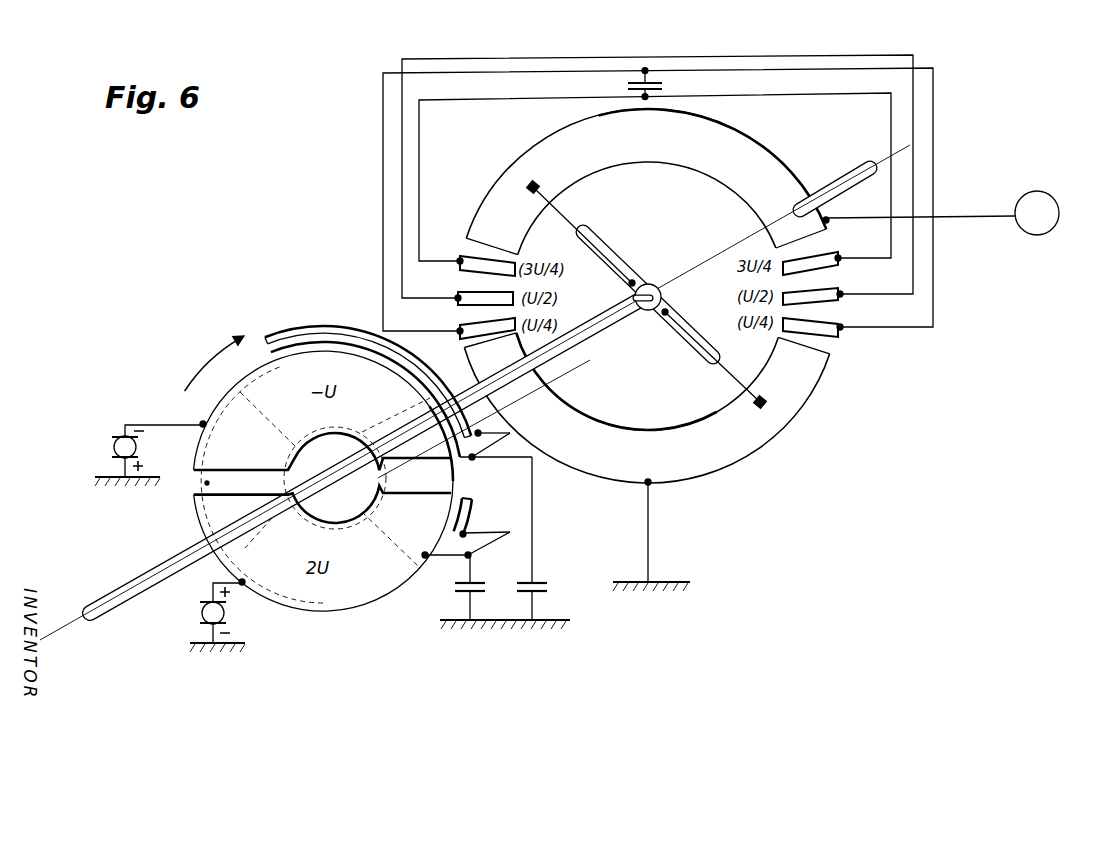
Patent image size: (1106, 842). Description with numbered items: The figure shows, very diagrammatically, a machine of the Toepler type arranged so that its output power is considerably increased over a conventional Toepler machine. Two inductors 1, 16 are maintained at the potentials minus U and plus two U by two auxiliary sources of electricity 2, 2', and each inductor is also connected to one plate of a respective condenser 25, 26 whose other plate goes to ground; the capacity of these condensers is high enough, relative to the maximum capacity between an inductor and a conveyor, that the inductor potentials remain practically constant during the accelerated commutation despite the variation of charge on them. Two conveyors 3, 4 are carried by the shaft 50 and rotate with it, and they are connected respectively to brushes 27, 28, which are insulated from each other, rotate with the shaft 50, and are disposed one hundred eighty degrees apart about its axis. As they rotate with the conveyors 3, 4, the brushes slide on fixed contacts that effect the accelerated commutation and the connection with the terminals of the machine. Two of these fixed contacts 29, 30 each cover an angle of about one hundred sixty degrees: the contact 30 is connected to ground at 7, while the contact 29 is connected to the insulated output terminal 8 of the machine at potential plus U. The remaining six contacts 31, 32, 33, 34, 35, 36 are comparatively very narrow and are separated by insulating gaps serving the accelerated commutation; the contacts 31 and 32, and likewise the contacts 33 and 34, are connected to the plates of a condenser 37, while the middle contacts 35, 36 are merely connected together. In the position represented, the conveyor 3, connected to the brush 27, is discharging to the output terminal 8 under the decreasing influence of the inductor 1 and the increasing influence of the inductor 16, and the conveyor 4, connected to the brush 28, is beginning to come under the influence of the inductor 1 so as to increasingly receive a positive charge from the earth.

The inductor 1 is at (302, 349).
The auxiliary source of electricity 2 is at (131, 455).
The auxiliary source of electricity 2' is at (194, 617).
The conveyor 3 is at (372, 349).
The conveyor 4 is at (207, 483).
The ground 7 is at (652, 578).
The insulated output terminal 8 is at (953, 218).
The inductor 16 is at (450, 513).
The condenser 25 is at (548, 589).
The condenser 26 is at (457, 590).
The brush 27 is at (533, 187).
The brush 28 is at (760, 402).
The fixed contact 29 is at (752, 160).
The fixed contact 30 is at (725, 460).
The fixed contact 31 is at (460, 331).
The fixed contact 32 is at (460, 261).
The fixed contact 33 is at (840, 327).
The fixed contact 34 is at (838, 258).
The middle contact 35 is at (458, 298).
The middle contact 36 is at (842, 295).
The condenser 37 is at (663, 84).
The shaft 50 is at (133, 588).